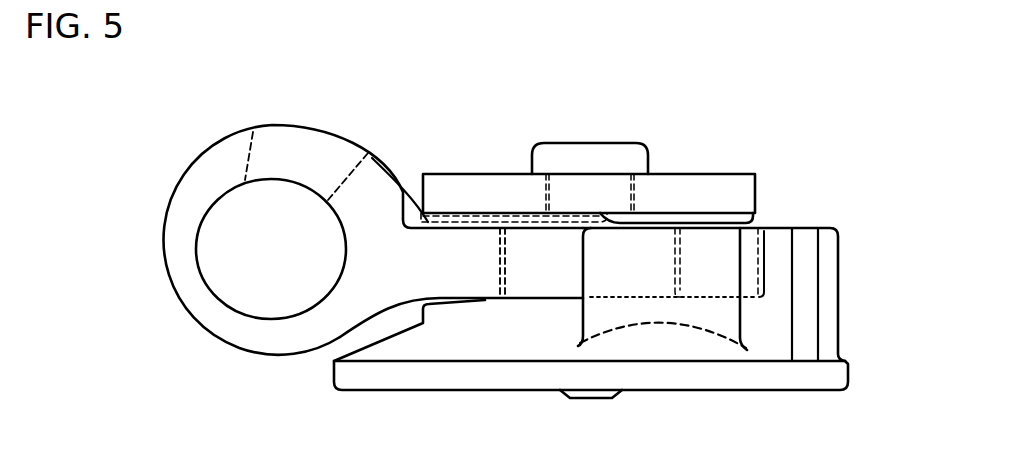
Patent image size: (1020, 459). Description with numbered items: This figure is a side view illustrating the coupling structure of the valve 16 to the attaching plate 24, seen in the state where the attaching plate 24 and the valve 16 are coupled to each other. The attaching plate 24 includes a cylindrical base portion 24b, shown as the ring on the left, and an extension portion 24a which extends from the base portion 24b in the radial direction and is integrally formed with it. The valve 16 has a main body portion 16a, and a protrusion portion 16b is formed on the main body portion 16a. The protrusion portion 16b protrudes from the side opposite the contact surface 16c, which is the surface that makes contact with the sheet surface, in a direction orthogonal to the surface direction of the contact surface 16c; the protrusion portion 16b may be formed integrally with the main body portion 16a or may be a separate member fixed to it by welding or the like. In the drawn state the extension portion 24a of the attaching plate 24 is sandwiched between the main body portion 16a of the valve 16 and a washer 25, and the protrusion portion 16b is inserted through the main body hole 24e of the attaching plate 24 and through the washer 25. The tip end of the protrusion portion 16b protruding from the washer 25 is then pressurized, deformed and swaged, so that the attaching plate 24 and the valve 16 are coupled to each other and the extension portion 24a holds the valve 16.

The valve 16 is at (875, 354).
The main body portion 16a is at (848, 378).
The protrusion portion 16b is at (606, 143).
The contact surface 16c is at (777, 391).
The attaching plate 24 is at (229, 99).
The extension portion 24a is at (442, 225).
The base portion 24b is at (185, 170).
The main body hole 24e is at (501, 272).
The washer 25 is at (755, 193).